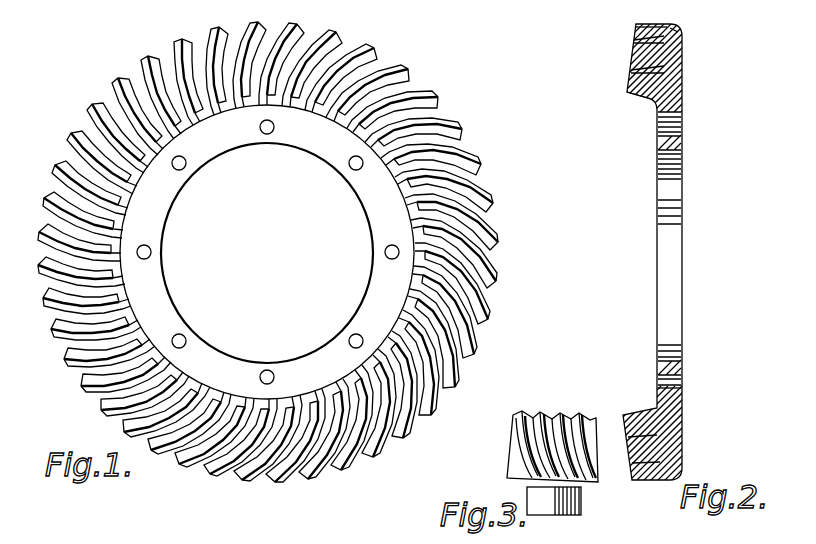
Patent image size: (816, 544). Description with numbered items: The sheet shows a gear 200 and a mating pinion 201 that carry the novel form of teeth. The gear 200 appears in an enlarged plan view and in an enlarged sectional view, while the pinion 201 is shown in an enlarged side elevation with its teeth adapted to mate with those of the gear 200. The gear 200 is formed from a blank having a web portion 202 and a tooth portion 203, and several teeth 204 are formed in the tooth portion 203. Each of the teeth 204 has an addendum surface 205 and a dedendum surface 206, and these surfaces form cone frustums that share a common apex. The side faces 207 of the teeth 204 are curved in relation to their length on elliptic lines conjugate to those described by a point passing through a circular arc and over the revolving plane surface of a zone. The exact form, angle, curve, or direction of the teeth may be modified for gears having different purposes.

In FIG. 1, the gear 200 is at (348, 137).
In FIG. 2, the gear 200 is at (675, 110).
In FIG. 3, the pinion 201 is at (512, 457).
In FIG. 1, the web portion 202 is at (160, 207).
In FIG. 2, the web portion 202 is at (679, 140).
In FIG. 1, the tooth portion 203 is at (440, 172).
In FIG. 2, the tooth portion 203 is at (662, 55).
In FIG. 1, the teeth 204 is at (480, 233).
In FIG. 2, the teeth 204 is at (633, 73).
In FIG. 1, the addendum surfaces 205 is at (398, 170).
In FIG. 2, the addendum surfaces 205 is at (638, 27).
In FIG. 1, the dedendum surfaces 206 is at (417, 227).
In FIG. 2, the dedendum surfaces 206 is at (675, 32).
In FIG. 1, the side faces 207 is at (455, 318).
In FIG. 2, the side faces 207 is at (635, 92).